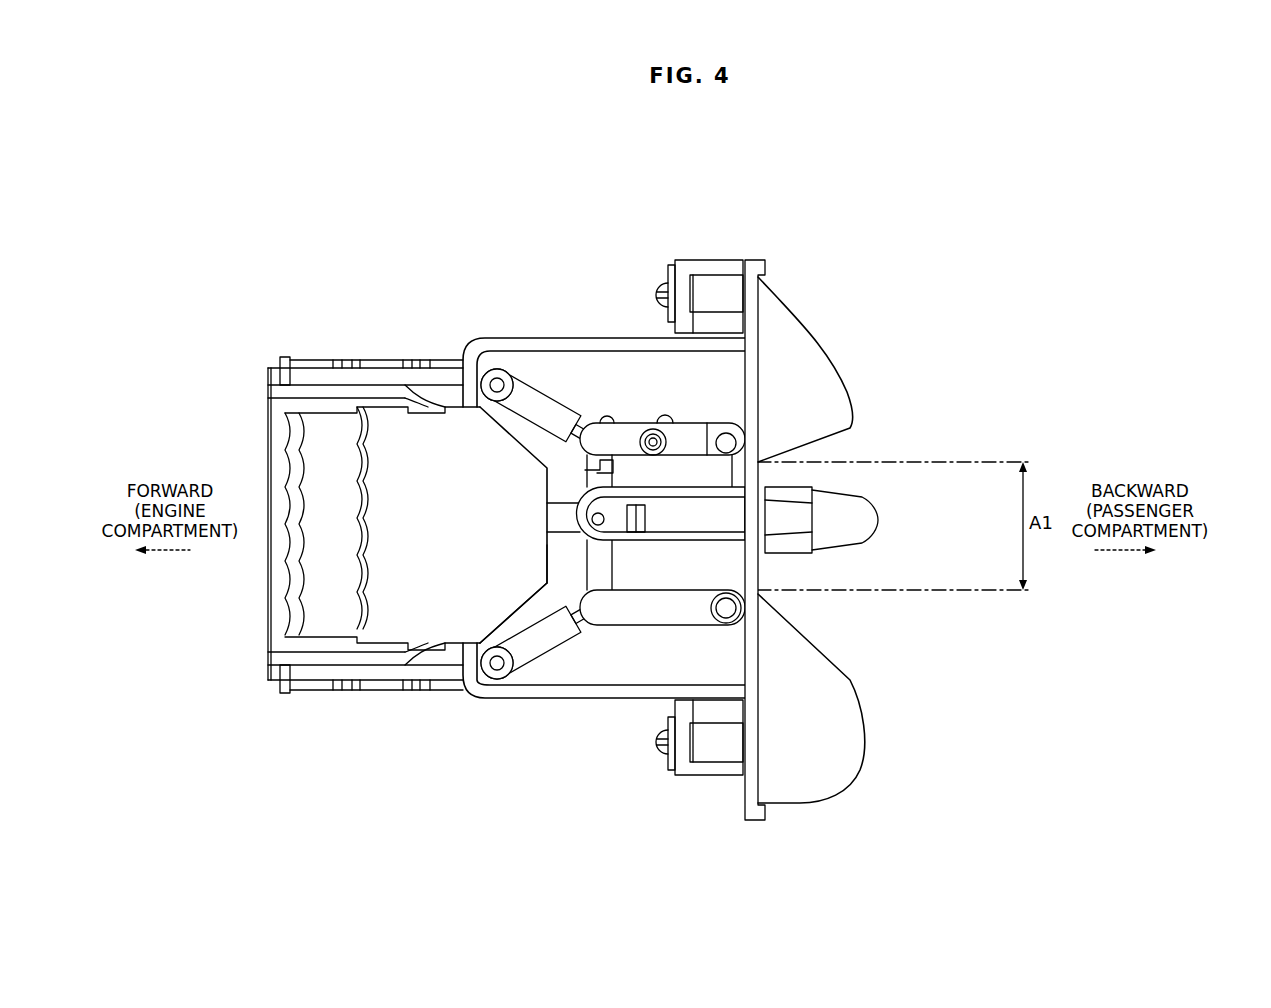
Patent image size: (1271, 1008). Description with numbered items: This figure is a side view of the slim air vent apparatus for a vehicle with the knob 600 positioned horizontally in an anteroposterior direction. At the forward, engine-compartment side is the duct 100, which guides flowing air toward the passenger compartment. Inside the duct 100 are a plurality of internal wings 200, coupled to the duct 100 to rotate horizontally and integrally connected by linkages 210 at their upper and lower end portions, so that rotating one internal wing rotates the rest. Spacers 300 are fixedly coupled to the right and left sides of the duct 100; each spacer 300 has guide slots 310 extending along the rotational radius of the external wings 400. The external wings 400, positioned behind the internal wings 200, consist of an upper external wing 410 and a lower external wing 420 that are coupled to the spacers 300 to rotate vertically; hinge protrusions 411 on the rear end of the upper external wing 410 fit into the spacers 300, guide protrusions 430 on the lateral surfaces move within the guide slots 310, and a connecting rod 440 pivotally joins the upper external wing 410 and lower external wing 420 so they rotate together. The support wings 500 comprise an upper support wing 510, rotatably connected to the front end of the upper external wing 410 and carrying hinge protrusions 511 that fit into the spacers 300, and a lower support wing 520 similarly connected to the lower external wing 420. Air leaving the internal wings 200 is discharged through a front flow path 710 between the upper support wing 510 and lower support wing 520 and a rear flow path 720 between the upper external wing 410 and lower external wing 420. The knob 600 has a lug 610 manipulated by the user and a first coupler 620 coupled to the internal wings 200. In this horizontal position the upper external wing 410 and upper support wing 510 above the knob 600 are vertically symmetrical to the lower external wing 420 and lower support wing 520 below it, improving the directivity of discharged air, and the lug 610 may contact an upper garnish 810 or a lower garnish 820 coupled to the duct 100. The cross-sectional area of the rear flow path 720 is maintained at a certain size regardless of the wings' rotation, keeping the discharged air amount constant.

The duct 100 is at (313, 360).
The internal wings 200 is at (395, 490).
The linkages 210 is at (430, 392).
The spacers 300 is at (578, 372).
The guide slots 310 is at (667, 417).
The external wings 400 is at (700, 636).
The upper external wing 410 is at (700, 443).
The hinge protrusions 411 is at (735, 445).
The lower external wing 420 is at (650, 605).
The guide protrusions 430 is at (648, 430).
The connecting rod 440 is at (620, 588).
The support wings 500 is at (560, 660).
The upper support wing 510 is at (543, 410).
The hinge protrusions 511 is at (497, 380).
The lower support wing 520 is at (536, 648).
The knob 600 is at (870, 490).
The lug 610 is at (862, 518).
The first coupler 620 is at (563, 497).
The front flow path 710 is at (560, 557).
The rear flow path 720 is at (727, 571).
The upper garnish 810 is at (808, 340).
The lower garnish 820 is at (858, 732).